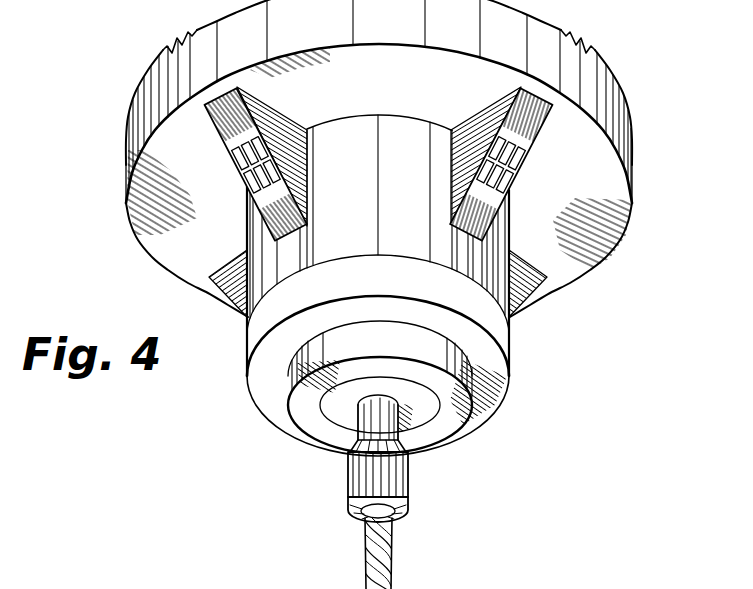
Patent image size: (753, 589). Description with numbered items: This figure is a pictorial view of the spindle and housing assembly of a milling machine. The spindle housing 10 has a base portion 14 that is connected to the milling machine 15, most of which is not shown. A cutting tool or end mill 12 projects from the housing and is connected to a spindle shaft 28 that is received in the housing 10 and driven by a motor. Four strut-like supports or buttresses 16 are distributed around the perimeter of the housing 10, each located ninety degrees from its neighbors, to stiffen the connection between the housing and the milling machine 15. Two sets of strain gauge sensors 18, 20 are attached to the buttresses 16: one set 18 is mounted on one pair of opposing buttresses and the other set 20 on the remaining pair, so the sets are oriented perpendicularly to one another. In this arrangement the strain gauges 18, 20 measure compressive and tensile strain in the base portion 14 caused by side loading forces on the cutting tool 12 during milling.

The spindle housing 10 is at (488, 277).
The cutting tool 12 is at (385, 558).
The base portion 14 is at (397, 133).
The milling machine 15 is at (617, 113).
The buttresses 16 is at (283, 128).
The strain gauge sensors 18 is at (237, 155).
The strain gauge sensors 20 is at (520, 158).
The spindle shaft 28 is at (387, 419).